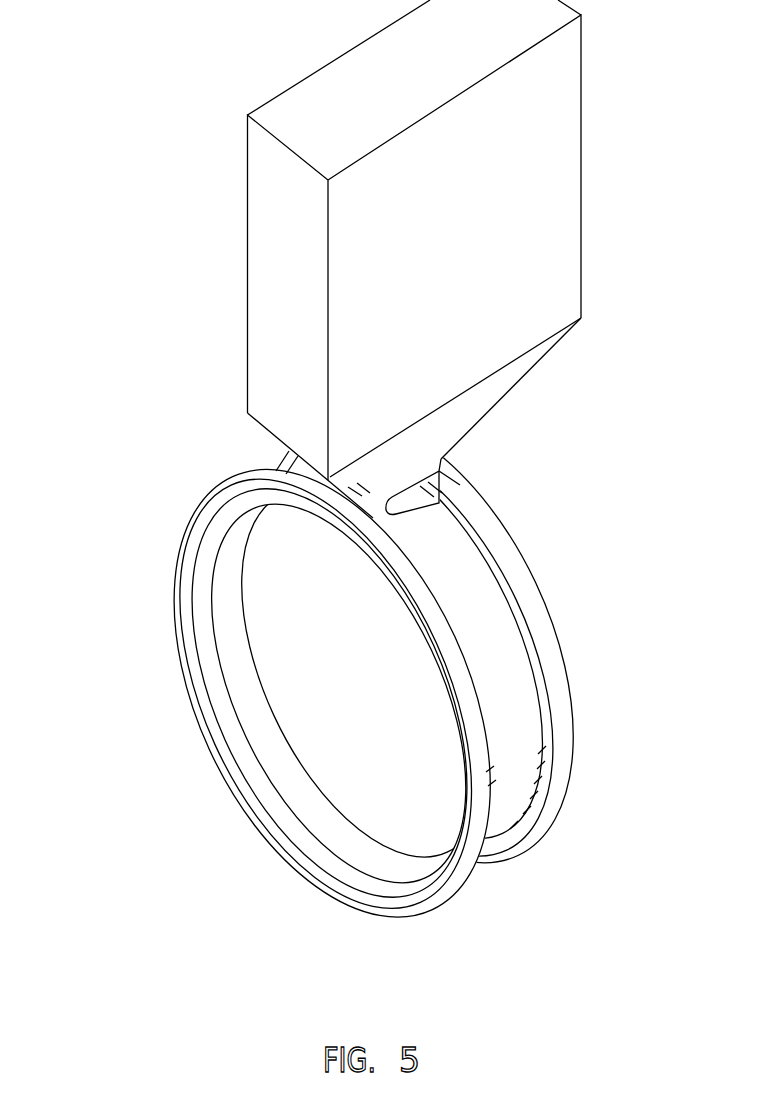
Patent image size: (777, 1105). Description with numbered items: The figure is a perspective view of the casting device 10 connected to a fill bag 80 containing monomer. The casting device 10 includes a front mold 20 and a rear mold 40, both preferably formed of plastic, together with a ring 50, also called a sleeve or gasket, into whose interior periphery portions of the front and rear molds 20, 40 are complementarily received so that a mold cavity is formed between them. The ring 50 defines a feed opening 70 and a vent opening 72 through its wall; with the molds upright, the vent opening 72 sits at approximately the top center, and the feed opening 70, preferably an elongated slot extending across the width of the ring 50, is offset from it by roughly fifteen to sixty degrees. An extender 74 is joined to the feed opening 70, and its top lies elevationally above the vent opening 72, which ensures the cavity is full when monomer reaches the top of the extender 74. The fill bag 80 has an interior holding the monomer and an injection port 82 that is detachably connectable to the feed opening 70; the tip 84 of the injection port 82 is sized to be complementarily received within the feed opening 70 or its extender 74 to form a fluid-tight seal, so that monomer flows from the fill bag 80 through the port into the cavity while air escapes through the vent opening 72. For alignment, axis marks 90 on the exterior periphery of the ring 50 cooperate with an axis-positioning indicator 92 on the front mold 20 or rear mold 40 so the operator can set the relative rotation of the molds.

The casting device 10 is at (118, 733).
The front mold 20 is at (346, 904).
The rear mold 40 is at (553, 613).
The ring 50 is at (498, 832).
The feed opening 70 is at (446, 516).
The vent opening 72 is at (328, 515).
The extender 74 is at (413, 543).
The fill bag 80 is at (572, 162).
The injection port 82 is at (517, 373).
The tip 84 is at (437, 466).
The axis marks 90 is at (542, 680).
The axis-positioning indicator 92 is at (563, 748).